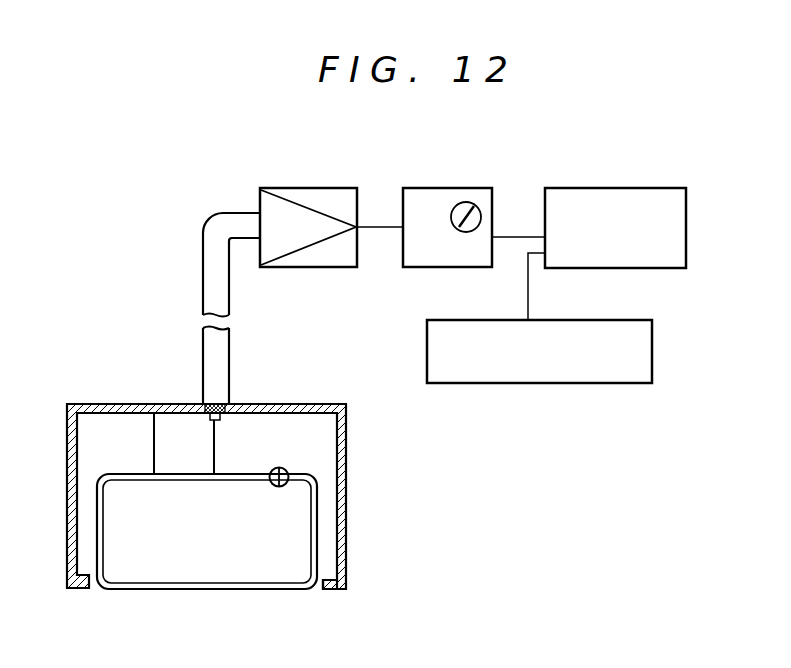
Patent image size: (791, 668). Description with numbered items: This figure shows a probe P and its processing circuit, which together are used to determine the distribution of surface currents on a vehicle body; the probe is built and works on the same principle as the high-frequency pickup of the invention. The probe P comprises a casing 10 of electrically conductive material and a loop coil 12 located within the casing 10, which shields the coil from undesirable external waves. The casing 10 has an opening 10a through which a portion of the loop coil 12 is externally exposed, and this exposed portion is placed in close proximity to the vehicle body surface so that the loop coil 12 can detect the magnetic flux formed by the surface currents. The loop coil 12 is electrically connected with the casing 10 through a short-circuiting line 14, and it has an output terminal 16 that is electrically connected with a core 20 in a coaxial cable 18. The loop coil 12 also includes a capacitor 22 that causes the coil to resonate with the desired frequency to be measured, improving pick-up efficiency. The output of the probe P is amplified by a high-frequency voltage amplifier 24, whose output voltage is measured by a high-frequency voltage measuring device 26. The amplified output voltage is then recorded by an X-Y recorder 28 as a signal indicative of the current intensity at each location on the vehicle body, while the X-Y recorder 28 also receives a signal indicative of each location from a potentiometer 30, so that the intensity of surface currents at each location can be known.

The casing 10 is at (347, 500).
The opening 10a is at (323, 589).
The loop coil 12 is at (317, 532).
The short-circuiting line 14 is at (152, 438).
The output terminal 16 is at (212, 440).
The coaxial cable 18 is at (225, 370).
The core 20 is at (222, 420).
The capacitor 22 is at (285, 467).
The high-frequency voltage amplifier 24 is at (295, 188).
The high-frequency voltage measuring device 26 is at (433, 188).
The X-Y recorder 28 is at (598, 188).
The potentiometer 30 is at (513, 385).
The probe P is at (63, 483).